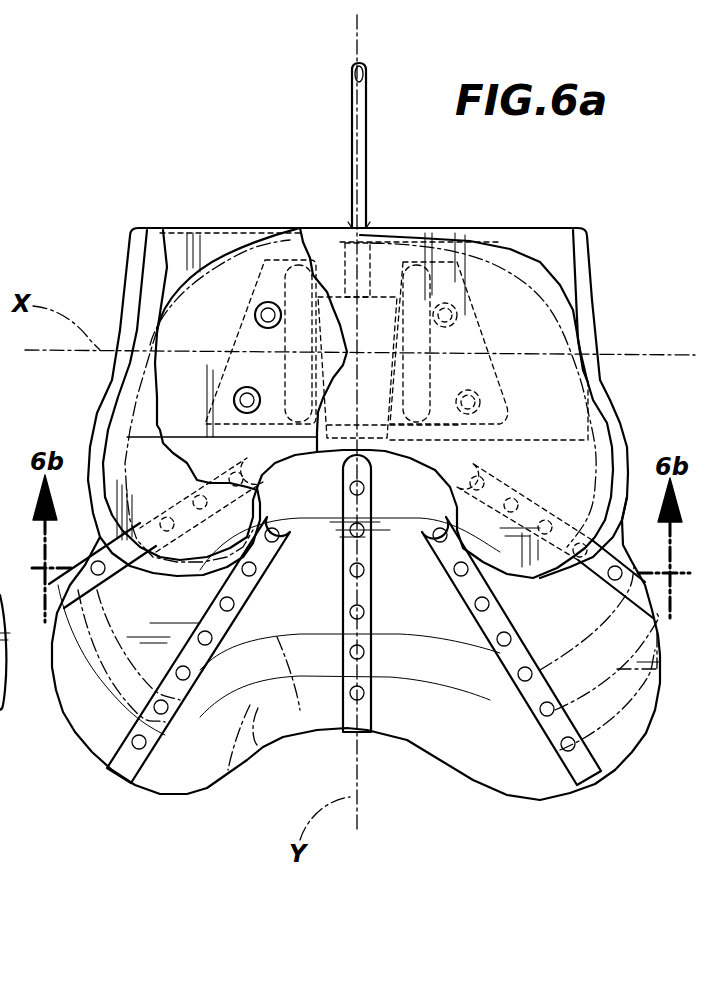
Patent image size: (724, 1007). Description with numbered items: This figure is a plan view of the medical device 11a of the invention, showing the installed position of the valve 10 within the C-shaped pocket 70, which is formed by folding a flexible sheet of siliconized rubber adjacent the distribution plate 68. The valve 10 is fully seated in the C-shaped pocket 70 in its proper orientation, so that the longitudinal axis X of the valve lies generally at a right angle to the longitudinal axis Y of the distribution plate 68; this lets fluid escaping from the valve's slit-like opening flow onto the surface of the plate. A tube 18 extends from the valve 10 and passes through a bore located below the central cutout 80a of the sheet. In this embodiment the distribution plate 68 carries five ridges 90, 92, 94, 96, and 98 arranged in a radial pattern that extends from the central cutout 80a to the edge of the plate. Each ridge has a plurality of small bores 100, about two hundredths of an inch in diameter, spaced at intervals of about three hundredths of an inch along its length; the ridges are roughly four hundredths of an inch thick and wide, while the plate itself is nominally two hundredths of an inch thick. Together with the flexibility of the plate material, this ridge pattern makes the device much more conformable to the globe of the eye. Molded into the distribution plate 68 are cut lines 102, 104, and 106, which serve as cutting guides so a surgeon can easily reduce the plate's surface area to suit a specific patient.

The surgical instrument assembly 11a is at (272, 188).
The tube 18 is at (365, 208).
The valve 10 is at (521, 270).
The C-shaped pocket 70 is at (557, 310).
The fixation plate 80a is at (403, 470).
The ridge 90 is at (108, 604).
The ridge 92 is at (146, 679).
The ridge 94 is at (386, 700).
The ridge 96 is at (533, 733).
The ridge 98 is at (597, 606).
The bores 100 is at (455, 560).
The cut line 102 is at (300, 710).
The cut line 104 is at (257, 745).
The cut line 106 is at (205, 745).
The distribution plate 68 is at (228, 770).